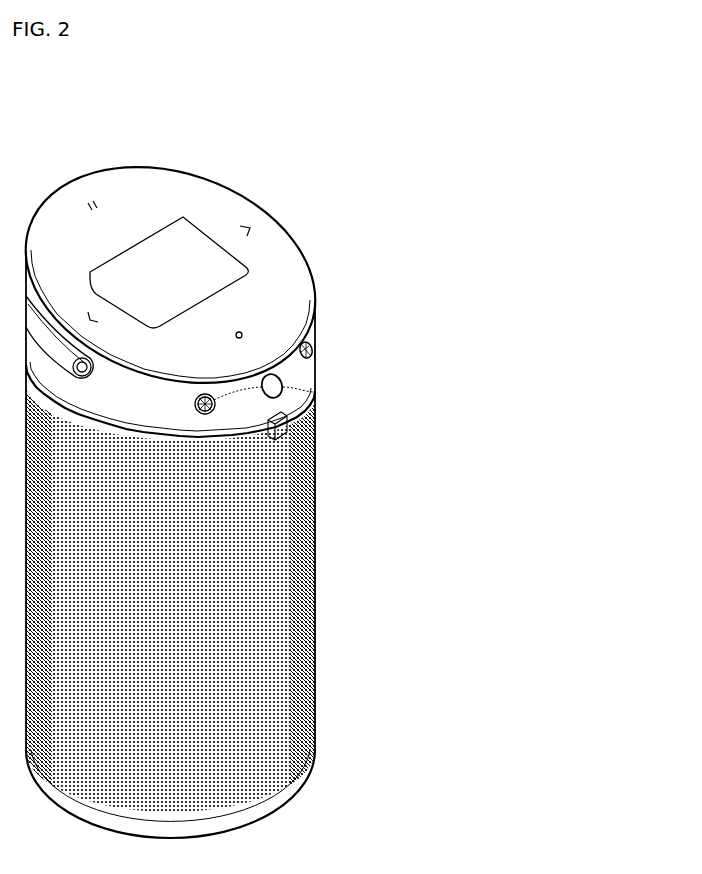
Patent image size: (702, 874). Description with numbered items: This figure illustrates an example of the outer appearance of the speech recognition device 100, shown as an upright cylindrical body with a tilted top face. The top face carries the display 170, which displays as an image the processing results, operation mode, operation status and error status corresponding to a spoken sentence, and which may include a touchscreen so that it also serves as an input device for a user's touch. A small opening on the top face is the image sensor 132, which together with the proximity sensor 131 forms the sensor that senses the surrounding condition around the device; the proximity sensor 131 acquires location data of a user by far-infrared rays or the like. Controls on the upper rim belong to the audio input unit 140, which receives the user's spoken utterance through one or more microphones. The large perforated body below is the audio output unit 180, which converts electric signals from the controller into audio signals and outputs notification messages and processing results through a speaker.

The speech recognition device 100 is at (262, 180).
The proximity sensor 131 is at (315, 422).
The image sensor 132 is at (242, 333).
The audio input unit 140 is at (315, 392).
The display 170 is at (199, 233).
The audio output unit 180 is at (315, 566).